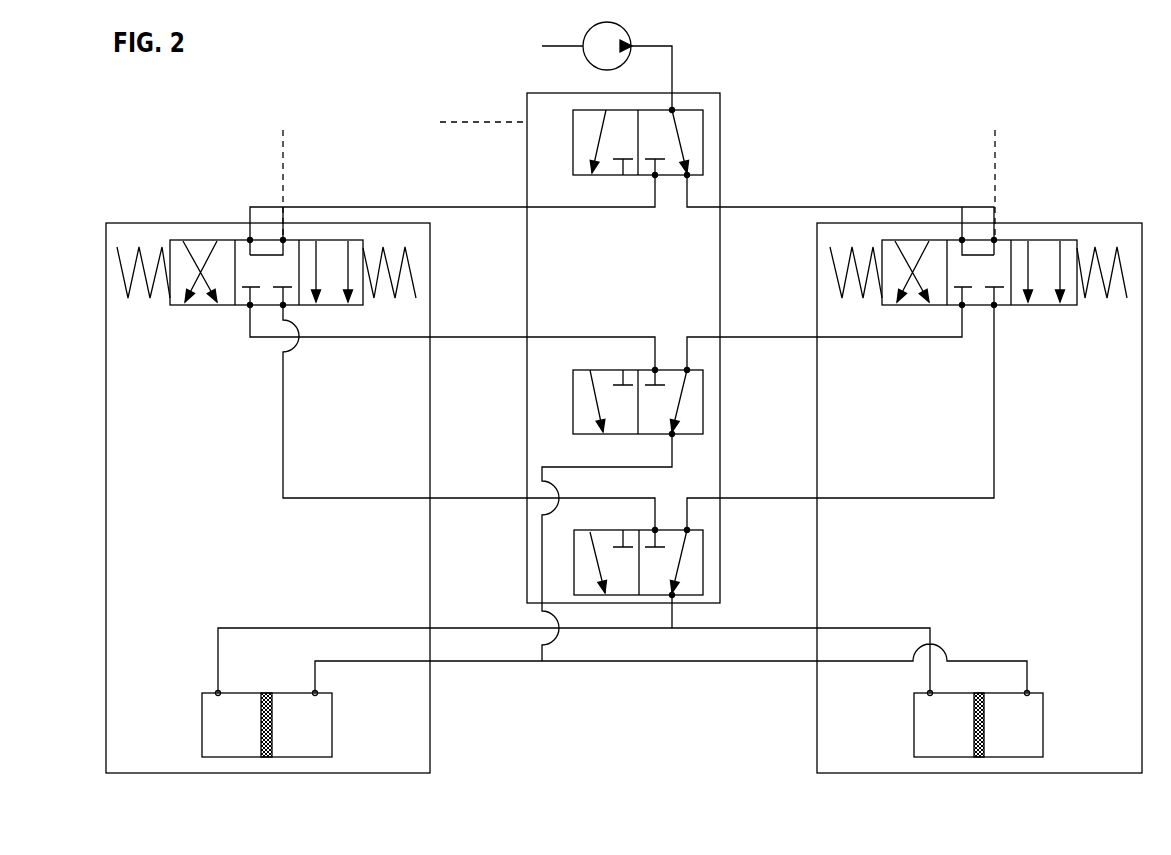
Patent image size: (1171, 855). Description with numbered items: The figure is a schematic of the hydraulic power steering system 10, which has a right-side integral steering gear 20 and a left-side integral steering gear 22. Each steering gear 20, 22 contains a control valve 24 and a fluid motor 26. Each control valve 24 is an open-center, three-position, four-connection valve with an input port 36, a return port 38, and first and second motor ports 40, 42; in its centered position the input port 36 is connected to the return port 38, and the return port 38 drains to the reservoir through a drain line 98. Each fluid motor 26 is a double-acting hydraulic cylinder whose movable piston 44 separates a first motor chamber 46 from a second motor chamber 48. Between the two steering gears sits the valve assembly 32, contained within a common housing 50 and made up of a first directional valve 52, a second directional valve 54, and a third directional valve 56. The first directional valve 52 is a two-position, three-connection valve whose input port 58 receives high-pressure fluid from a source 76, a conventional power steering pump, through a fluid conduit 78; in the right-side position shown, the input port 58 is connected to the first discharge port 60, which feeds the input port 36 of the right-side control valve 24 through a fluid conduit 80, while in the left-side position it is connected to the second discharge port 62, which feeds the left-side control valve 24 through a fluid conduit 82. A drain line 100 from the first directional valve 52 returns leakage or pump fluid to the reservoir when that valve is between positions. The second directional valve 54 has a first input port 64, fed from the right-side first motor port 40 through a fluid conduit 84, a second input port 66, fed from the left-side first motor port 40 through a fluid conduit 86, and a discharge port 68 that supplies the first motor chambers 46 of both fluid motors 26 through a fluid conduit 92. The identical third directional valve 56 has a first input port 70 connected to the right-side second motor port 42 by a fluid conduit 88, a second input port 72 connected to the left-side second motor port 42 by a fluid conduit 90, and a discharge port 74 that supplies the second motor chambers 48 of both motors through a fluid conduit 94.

The hydraulic power steering system 10 is at (803, 92).
The integral steering gear 20 is at (810, 717).
The integral steering gear 22 is at (438, 727).
The control valve 24 is at (160, 241).
The fluid motor 26 is at (654, 750).
The valve assembly 32 is at (622, 356).
The input port 36 is at (250, 240).
The return port 38 is at (283, 240).
The first motor port 40 is at (250, 305).
The second motor port 42 is at (283, 305).
The piston 44 is at (266, 745).
The first motor chamber 46 is at (290, 736).
The second motor chamber 48 is at (222, 736).
The common housing 50 is at (525, 303).
The first directional valve 52 is at (703, 140).
The second directional valve 54 is at (703, 408).
The third directional valve 56 is at (703, 565).
The input port 58 is at (672, 110).
The first discharge port 60 is at (687, 175).
The second discharge port 62 is at (655, 175).
The first input port 64 is at (687, 370).
The second input port 66 is at (655, 370).
The discharge port 68 is at (672, 434).
The first input port 70 is at (687, 530).
The second input port 72 is at (655, 530).
The discharge port 74 is at (672, 595).
The source of high-pressure steering fluid 76 is at (584, 58).
The fluid conduit 78 is at (672, 52).
The fluid conduit 80 is at (852, 207).
The fluid conduit 82 is at (462, 207).
The fluid conduit 84 is at (783, 337).
The fluid conduit 86 is at (457, 337).
The fluid conduit 88 is at (791, 498).
The fluid conduit 90 is at (462, 498).
The fluid conduit 92 is at (550, 464).
The fluid conduit 94 is at (668, 612).
The drain line 98 is at (281, 165).
The drain line 100 is at (482, 120).